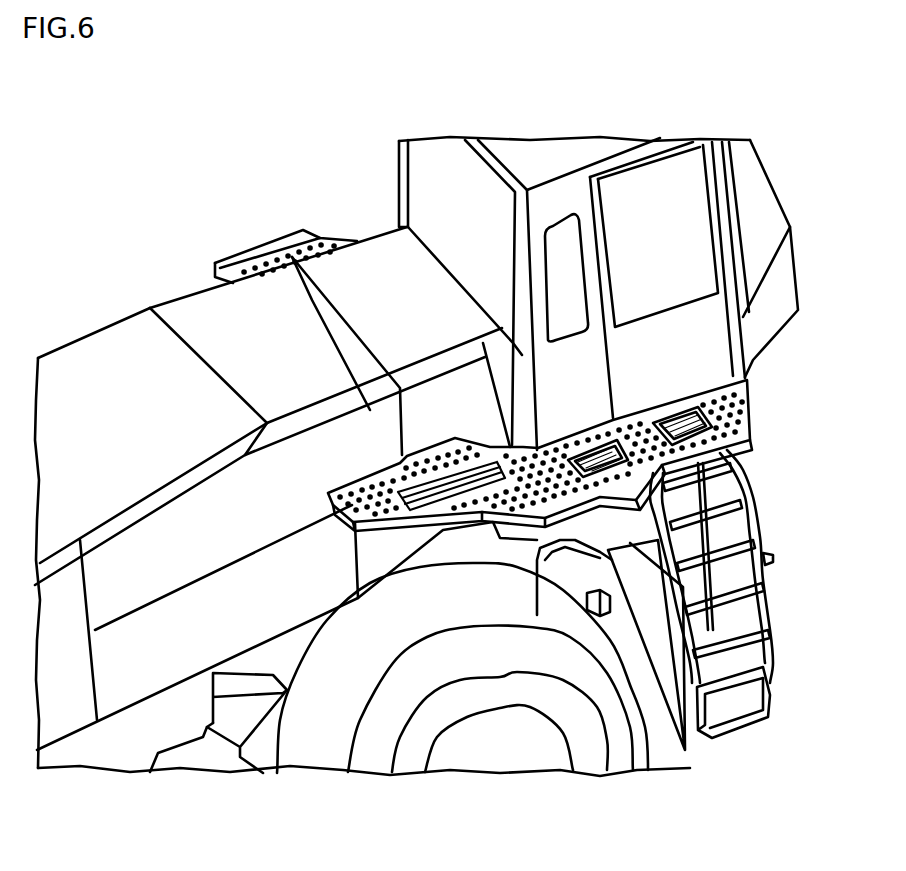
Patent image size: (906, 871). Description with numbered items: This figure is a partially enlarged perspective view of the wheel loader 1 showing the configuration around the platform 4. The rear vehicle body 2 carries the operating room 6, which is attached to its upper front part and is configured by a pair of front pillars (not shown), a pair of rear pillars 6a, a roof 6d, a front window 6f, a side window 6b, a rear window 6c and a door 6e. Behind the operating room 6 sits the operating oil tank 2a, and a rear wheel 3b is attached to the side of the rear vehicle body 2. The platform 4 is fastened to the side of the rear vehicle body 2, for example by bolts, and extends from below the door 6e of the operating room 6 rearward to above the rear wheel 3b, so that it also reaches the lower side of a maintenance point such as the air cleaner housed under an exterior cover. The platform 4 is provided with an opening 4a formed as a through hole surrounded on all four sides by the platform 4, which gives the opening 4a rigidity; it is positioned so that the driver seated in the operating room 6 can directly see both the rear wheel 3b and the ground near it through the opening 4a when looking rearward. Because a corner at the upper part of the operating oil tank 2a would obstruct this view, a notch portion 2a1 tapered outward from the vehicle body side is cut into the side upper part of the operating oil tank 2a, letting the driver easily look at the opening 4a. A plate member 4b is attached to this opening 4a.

The wheel loader 1 is at (724, 84).
The rear vehicle body 2 is at (123, 752).
The operating oil tank 2a is at (367, 276).
The notch portion 2a1 is at (512, 455).
The rear wheel 3b is at (313, 752).
The platform 4 is at (295, 258).
The opening 4a is at (440, 470).
The plate member 4b is at (377, 475).
The operating room 6 is at (510, 78).
The rear pillar 6a is at (520, 273).
The side window 6b is at (560, 212).
The rear window 6c is at (428, 160).
The roof 6d is at (533, 150).
The door 6e is at (697, 333).
The front window 6f is at (753, 176).